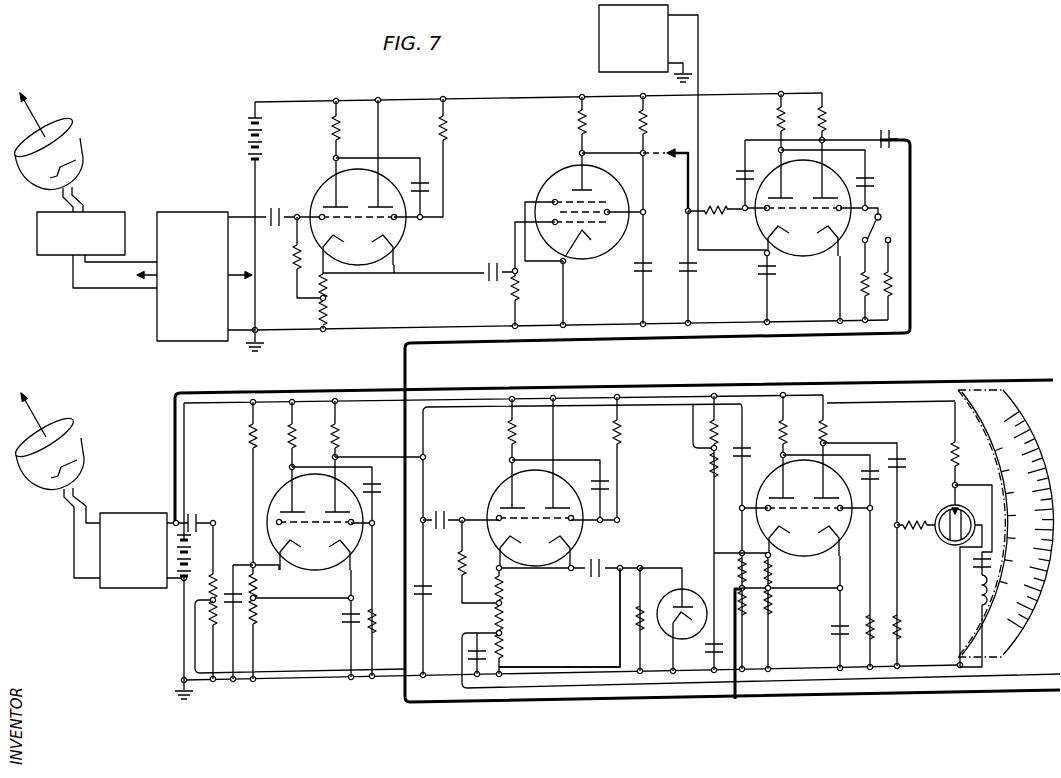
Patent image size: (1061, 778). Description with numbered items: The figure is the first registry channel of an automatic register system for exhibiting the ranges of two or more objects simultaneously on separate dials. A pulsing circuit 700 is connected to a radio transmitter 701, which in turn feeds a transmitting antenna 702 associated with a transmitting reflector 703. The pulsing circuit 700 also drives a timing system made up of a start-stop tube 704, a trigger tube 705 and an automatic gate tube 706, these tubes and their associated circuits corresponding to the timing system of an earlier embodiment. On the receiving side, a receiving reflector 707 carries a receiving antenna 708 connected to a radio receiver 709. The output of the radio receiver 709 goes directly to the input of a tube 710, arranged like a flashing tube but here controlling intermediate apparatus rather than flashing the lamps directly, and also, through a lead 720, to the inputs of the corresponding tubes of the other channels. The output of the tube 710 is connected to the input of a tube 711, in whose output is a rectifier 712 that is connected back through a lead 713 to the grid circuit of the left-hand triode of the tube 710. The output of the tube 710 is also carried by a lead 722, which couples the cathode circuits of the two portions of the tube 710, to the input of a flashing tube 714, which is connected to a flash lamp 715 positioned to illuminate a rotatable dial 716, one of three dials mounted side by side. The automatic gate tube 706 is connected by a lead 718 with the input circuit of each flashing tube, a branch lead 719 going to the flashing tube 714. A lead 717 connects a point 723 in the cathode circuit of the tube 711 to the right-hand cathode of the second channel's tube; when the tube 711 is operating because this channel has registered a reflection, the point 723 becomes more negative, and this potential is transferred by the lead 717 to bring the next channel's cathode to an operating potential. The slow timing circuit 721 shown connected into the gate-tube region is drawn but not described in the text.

The pulsing circuit 700 is at (193, 212).
The radio transmitter 701 is at (113, 212).
The transmitting antenna 702 is at (80, 150).
The transmitting reflector 703 is at (55, 130).
The start-stop tube 704 is at (404, 238).
The trigger tube 705 is at (585, 260).
The automatic gate tube 706 is at (798, 256).
The receiving reflector 707 is at (75, 440).
The receiving antenna 708 is at (82, 452).
The radio receiver 709 is at (150, 513).
The tube 710 is at (300, 568).
The tube 711 is at (578, 532).
The rectifier 712 is at (690, 592).
The lead 713 is at (582, 667).
The flashing tube 714 is at (805, 558).
The flash lamp 715 is at (950, 543).
The rotatable dial 716 is at (1016, 413).
The lead 717 is at (1013, 674).
The lead 718 is at (898, 695).
The branch lead 719 is at (736, 655).
The lead 720 is at (478, 390).
The slow timing circuit 721 is at (599, 63).
The lead 722 is at (280, 598).
The point 723 is at (503, 633).